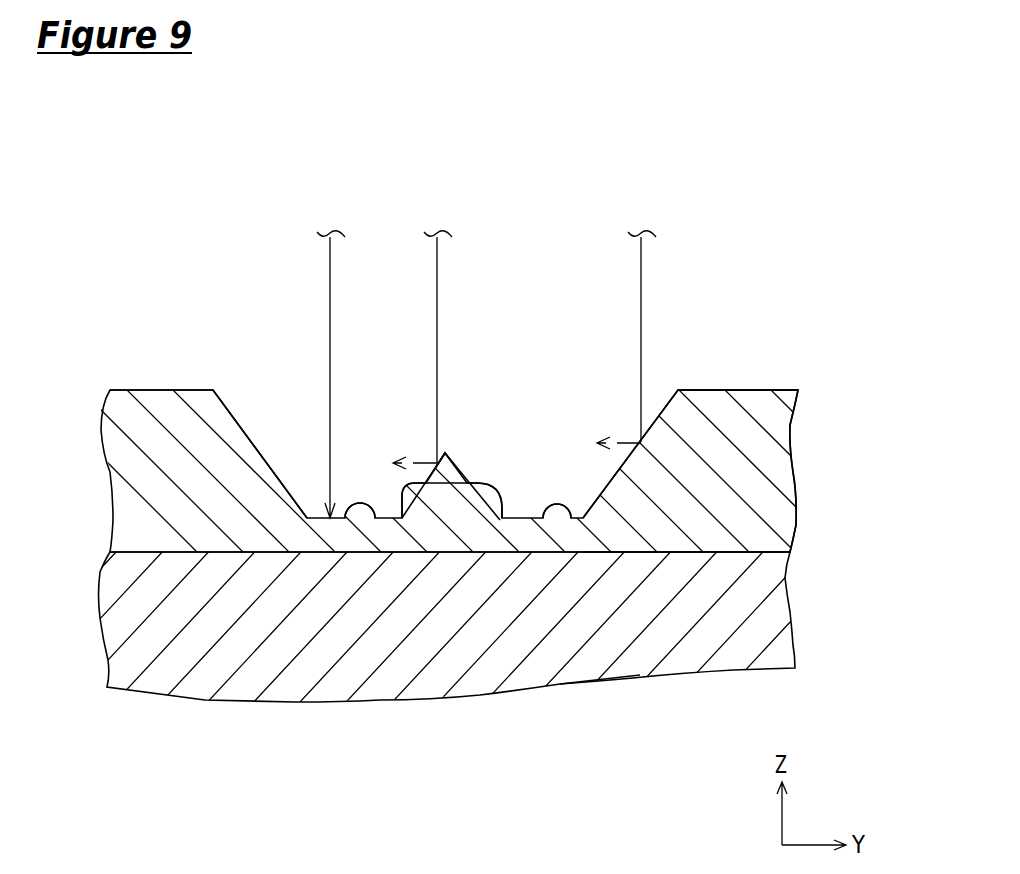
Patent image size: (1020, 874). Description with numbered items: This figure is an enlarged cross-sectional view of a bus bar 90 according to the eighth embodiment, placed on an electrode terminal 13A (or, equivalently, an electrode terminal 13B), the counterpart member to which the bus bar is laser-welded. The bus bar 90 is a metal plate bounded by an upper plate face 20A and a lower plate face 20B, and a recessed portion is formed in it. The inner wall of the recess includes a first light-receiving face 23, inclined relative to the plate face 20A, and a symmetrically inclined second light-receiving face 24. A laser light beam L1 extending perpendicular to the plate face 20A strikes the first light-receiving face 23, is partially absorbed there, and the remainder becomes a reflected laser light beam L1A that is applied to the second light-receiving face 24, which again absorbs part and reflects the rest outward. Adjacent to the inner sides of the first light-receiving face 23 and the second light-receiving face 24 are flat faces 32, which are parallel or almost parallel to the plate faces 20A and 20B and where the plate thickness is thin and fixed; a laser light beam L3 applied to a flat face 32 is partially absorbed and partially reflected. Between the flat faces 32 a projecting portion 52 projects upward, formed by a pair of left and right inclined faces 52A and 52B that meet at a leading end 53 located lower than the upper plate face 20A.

The plate face 20A is at (755, 390).
The plate face 20B is at (733, 555).
The second light-receiving face 24 is at (222, 404).
The first light-receiving face 23 is at (662, 410).
The bus bar 90 is at (763, 470).
The electrode terminal 13A is at (707, 600).
The electrode terminal 13B is at (724, 676).
The flat face 32 is at (345, 519).
The projecting portion 52 is at (466, 638).
The inclined face 52A is at (403, 519).
The inclined face 52B is at (505, 519).
The leading end 53 is at (445, 453).
The laser light beam L3 is at (330, 268).
The laser light beam L1 is at (641, 267).
The reflected laser light beam L1A is at (623, 442).